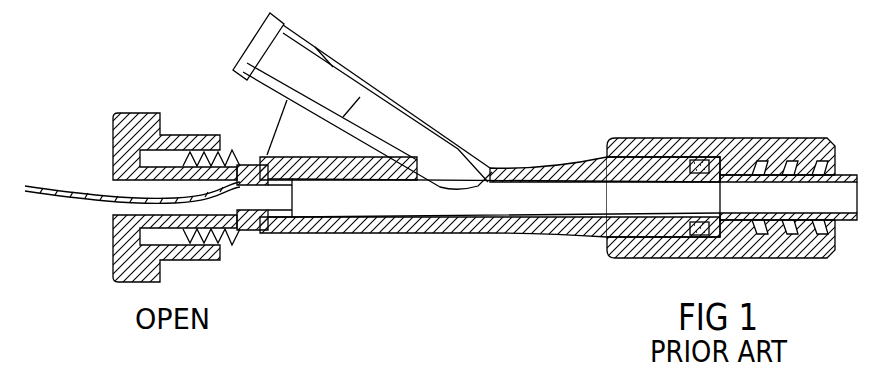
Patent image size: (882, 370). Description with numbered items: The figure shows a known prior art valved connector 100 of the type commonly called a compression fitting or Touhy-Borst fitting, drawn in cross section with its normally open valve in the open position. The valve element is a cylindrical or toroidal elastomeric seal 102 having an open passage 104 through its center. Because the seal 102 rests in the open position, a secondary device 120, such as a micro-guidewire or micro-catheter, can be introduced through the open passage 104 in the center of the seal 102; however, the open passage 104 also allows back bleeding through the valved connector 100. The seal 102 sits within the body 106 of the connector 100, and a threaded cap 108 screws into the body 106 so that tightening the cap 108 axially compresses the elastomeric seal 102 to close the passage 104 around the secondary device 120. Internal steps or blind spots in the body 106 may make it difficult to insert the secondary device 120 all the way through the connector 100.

The valved connector 100 is at (563, 96).
The elastomeric seal 102 is at (256, 220).
The open passage 104 is at (263, 200).
The body 106 is at (444, 137).
The threaded cap 108 is at (128, 113).
The secondary device 120 is at (50, 186).